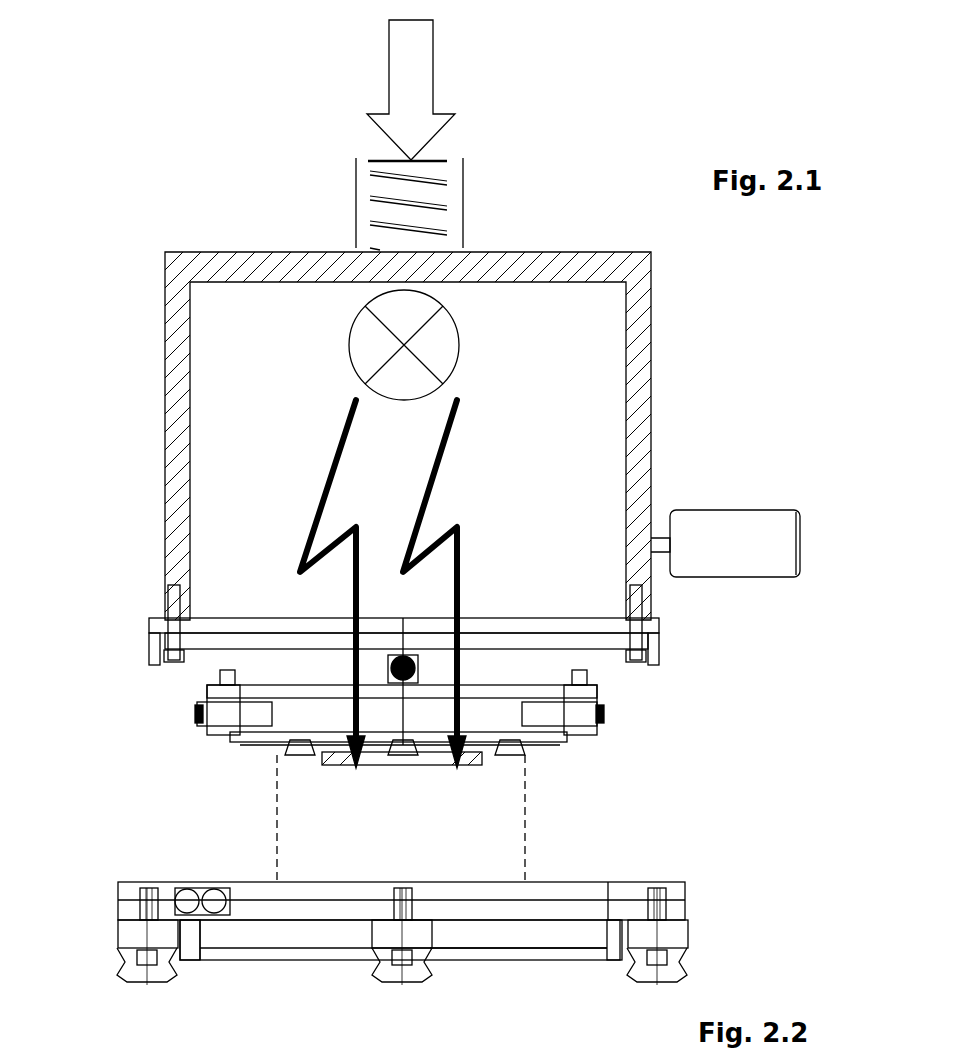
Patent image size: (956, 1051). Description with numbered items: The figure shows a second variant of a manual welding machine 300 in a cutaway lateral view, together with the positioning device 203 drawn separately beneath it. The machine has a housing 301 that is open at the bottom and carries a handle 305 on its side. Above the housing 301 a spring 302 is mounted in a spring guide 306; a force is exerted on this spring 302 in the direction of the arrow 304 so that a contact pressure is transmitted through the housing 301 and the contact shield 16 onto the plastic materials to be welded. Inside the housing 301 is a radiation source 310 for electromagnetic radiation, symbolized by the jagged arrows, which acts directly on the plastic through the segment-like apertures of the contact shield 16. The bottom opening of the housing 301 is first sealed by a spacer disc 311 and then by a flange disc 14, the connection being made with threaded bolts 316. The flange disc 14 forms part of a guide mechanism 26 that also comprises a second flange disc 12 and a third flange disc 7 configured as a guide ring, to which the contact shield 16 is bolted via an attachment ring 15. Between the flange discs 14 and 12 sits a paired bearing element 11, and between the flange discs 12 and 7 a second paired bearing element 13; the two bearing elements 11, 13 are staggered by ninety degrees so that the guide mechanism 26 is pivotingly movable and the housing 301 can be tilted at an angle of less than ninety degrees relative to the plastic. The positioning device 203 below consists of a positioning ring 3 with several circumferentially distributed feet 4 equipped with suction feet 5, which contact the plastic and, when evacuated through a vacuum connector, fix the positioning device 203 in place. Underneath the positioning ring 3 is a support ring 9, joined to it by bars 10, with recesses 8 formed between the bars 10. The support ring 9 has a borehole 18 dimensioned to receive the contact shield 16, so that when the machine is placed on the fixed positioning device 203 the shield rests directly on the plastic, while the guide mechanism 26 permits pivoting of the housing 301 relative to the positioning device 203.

In FIG. 2.1, the manual welding machine 300 is at (596, 163).
In FIG. 2.1, the arrow 304 is at (408, 95).
In FIG. 2.1, the spring guide 306 is at (350, 165).
In FIG. 2.1, the spring 302 is at (370, 195).
In FIG. 2.1, the housing 301 is at (635, 395).
In FIG. 2.1, the radiation source 310 is at (440, 348).
In FIG. 2.1, the handle 305 is at (725, 523).
In FIG. 2.1, the spacer disc 311 is at (600, 623).
In FIG. 2.1, the threaded bolts 316 is at (600, 646).
In FIG. 2.1, the flange disc 14 is at (212, 645).
In FIG. 2.1, the bearing element 11 is at (390, 663).
In FIG. 2.1, the flange disc 12 is at (255, 690).
In FIG. 2.1, the bearing element 13 is at (215, 712).
In FIG. 2.1, the contact shield 16 is at (385, 755).
In FIG. 2.1, the flange disc 7 is at (315, 745).
In FIG. 2.1, the attachment ring 15 is at (492, 747).
In FIG. 2.1, the guide mechanism 26 is at (672, 712).
In FIG. 2.2, the positioning device 203 is at (692, 862).
In FIG. 2.2, the positioning ring 3 is at (292, 898).
In FIG. 2.2, the support ring 9 is at (247, 955).
In FIG. 2.2, the recesses 8 is at (323, 935).
In FIG. 2.2, the bars 10 is at (190, 945).
In FIG. 2.2, the feet 4 is at (130, 927).
In FIG. 2.2, the suction feet 5 is at (138, 975).
In FIG. 2.2, the borehole 18 is at (520, 948).